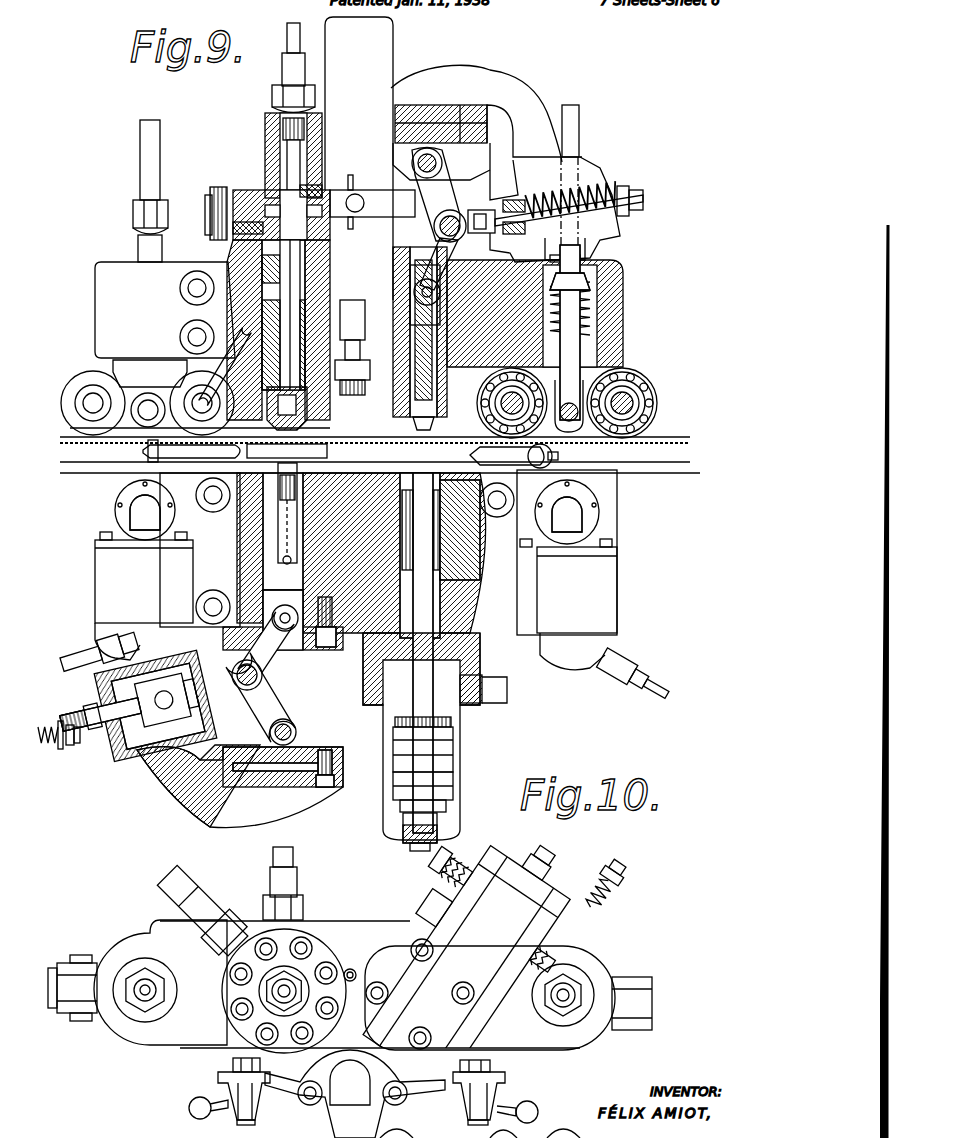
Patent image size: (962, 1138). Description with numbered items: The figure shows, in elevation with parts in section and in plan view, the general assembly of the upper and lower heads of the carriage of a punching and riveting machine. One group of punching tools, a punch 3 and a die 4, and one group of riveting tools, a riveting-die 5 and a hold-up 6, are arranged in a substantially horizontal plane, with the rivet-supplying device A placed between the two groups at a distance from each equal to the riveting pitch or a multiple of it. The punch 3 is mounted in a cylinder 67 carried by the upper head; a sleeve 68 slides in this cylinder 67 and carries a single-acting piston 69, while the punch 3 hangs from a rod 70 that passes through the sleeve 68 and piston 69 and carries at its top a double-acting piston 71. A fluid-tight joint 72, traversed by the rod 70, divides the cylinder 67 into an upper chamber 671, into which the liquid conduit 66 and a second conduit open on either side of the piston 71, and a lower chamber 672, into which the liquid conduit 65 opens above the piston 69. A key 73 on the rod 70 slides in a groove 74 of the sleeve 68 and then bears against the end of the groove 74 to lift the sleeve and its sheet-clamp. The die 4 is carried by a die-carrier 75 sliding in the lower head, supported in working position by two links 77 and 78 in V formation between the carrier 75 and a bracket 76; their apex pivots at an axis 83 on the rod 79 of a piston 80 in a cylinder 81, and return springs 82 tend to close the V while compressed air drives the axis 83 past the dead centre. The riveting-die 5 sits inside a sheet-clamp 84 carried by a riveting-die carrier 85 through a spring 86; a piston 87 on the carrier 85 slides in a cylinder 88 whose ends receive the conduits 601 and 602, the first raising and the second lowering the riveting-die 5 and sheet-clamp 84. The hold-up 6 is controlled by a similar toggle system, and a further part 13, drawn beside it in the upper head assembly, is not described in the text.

In FIG. 9, the liquid conduit 66 is at (292, 42).
In FIG. 10, the liquid conduit 66 is at (280, 992).
In FIG. 9, the double-acting piston 71 is at (266, 165).
In FIG. 9, the fluid-tight joint 72 is at (266, 196).
In FIG. 9, the liquid conduit 65 is at (232, 207).
In FIG. 10, the liquid conduit 65 is at (196, 893).
In FIG. 9, the upper chamber 671 is at (305, 190).
In FIG. 9, the lower chamber 672 is at (245, 235).
In FIG. 9, the single-acting piston 69 is at (265, 290).
In FIG. 9, the cylinder 67 is at (318, 252).
In FIG. 9, the groove 74 is at (270, 425).
In FIG. 9, the key 73 is at (355, 368).
In FIG. 9, the rod 70 is at (240, 310).
In FIG. 9, the sleeve 68 is at (250, 365).
In FIG. 9, the hold-up 6 is at (435, 428).
In FIG. 9, the rivet-supplying device A is at (370, 428).
In FIG. 9, the bearing 13 is at (622, 378).
In FIG. 9, the punch 3 is at (247, 447).
In FIG. 9, the die 4 is at (318, 478).
In FIG. 9, the riveting-die 5 is at (420, 480).
In FIG. 9, the sheet-clamp 84 is at (462, 475).
In FIG. 9, the die-carrier 75 is at (263, 476).
In FIG. 9, the riveting-die-carrying part 85 is at (433, 650).
In FIG. 9, the spring 86 is at (440, 575).
In FIG. 9, the link 78 is at (262, 653).
In FIG. 9, the pivoting axis 83 is at (247, 682).
In FIG. 9, the link 77 is at (270, 705).
In FIG. 9, the bracket 76 is at (300, 746).
In FIG. 9, the rod 79 is at (180, 760).
In FIG. 9, the piston 80 is at (125, 760).
In FIG. 9, the return springs 82 is at (62, 723).
In FIG. 9, the cylinder 81 is at (105, 745).
In FIG. 9, the conduit 602 is at (500, 690).
In FIG. 9, the piston 87 is at (430, 750).
In FIG. 9, the cylinder 88 is at (455, 772).
In FIG. 9, the conduit 601 is at (412, 840).